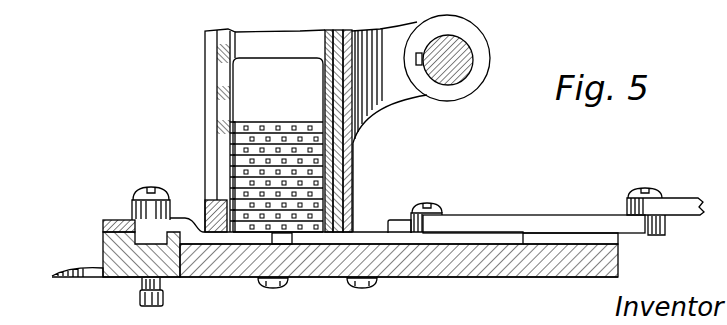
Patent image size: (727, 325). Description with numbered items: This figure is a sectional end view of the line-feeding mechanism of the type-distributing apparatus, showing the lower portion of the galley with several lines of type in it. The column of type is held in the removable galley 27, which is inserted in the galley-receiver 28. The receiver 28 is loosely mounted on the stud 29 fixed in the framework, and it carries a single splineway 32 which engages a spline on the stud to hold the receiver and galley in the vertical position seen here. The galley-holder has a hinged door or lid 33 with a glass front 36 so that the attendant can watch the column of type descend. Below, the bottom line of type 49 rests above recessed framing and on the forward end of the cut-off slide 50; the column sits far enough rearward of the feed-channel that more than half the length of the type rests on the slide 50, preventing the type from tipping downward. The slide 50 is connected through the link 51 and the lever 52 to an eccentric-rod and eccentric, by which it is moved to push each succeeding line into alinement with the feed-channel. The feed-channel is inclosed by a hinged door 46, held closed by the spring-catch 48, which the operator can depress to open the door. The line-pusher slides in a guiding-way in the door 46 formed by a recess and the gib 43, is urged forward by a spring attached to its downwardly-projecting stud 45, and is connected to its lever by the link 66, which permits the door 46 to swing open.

The galley 27 is at (325, 47).
The galley-receiver 28 is at (342, 190).
The stud 29 is at (458, 70).
The splineway 32 is at (417, 53).
The door or lid 33 is at (212, 110).
The glass front 36 is at (222, 153).
The gib 43 is at (103, 222).
The downwardly-projecting stud 45 is at (163, 290).
The door 46 is at (103, 247).
The spring-catch 48 is at (86, 278).
The bottom line of type 49 is at (292, 225).
The cut-off slide 50 is at (490, 238).
The link 51 is at (549, 224).
The lever 52 is at (683, 206).
The link 66 is at (133, 206).